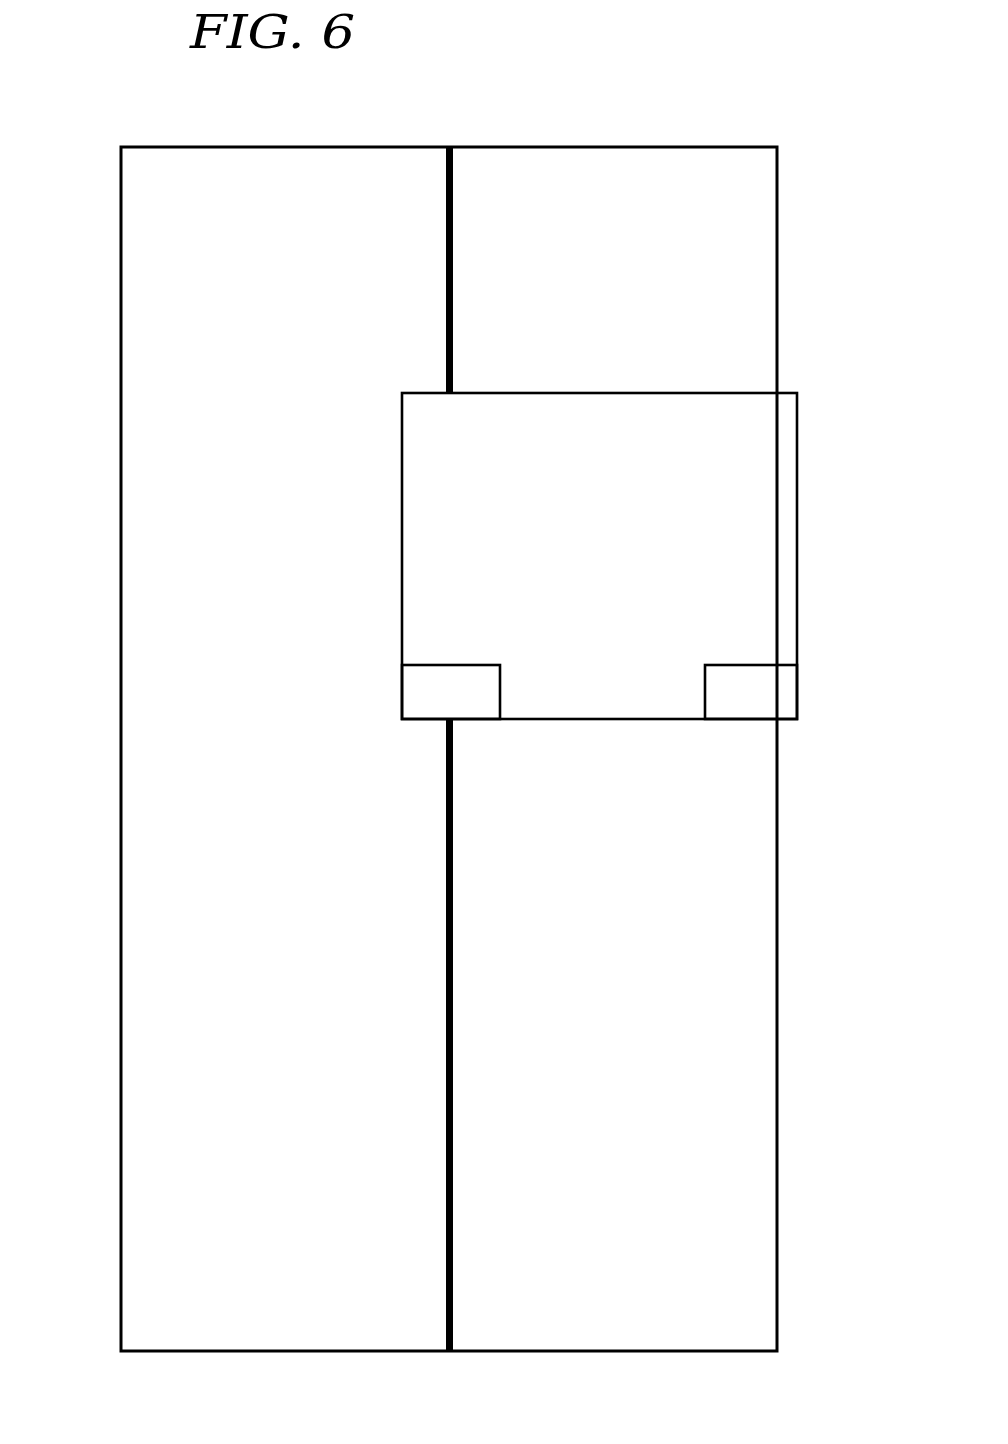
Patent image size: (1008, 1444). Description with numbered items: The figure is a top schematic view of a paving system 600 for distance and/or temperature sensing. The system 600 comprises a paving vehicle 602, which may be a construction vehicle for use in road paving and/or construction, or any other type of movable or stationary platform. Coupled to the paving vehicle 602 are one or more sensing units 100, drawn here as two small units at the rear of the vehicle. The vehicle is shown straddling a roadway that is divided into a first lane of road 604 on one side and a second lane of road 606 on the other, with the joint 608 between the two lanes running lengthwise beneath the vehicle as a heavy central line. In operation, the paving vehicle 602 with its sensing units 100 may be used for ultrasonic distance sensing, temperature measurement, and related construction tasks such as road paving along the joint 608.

The paving system 600 is at (620, 130).
The paving vehicle 602 is at (795, 524).
The first lane of road 604 is at (167, 310).
The second lane of road 606 is at (722, 970).
The joint 608 is at (446, 952).
The sensing unit 100 is at (712, 690).